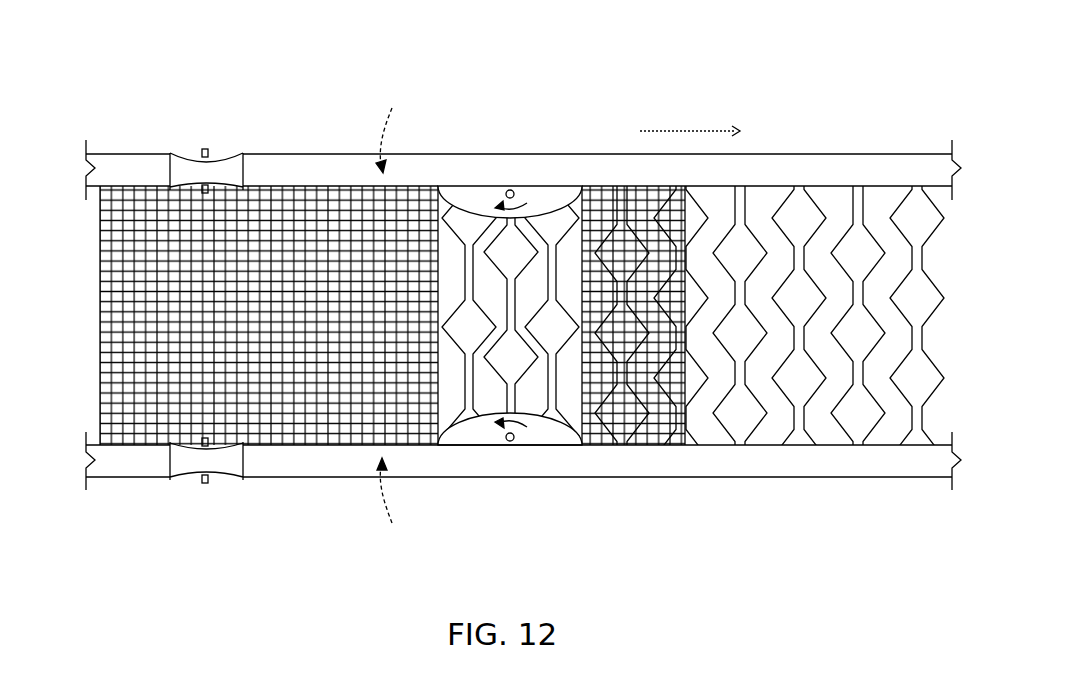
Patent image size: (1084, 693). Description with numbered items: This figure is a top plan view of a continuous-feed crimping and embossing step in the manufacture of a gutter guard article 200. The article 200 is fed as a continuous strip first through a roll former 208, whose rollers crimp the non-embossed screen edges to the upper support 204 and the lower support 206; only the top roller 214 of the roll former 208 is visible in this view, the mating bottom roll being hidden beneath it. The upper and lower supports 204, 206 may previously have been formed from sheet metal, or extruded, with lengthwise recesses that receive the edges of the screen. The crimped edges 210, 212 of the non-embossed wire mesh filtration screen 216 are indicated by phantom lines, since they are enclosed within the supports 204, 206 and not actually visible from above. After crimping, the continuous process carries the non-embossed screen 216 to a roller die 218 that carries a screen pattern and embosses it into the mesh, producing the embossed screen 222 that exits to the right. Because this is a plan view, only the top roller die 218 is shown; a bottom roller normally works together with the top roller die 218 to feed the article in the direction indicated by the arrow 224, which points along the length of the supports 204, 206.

The gutter guard article 200 is at (802, 77).
The upper support 204 is at (296, 172).
The lower support 206 is at (295, 478).
The roll former 208 is at (190, 131).
The crimped edge 210 is at (393, 128).
The crimped edge 212 is at (394, 507).
The top roller 214 is at (224, 172).
The non-embossed wire mesh filtration screen 216 is at (127, 292).
The roller die 218 is at (558, 210).
The embossed screen 222 is at (663, 426).
The arrow 224 is at (686, 131).